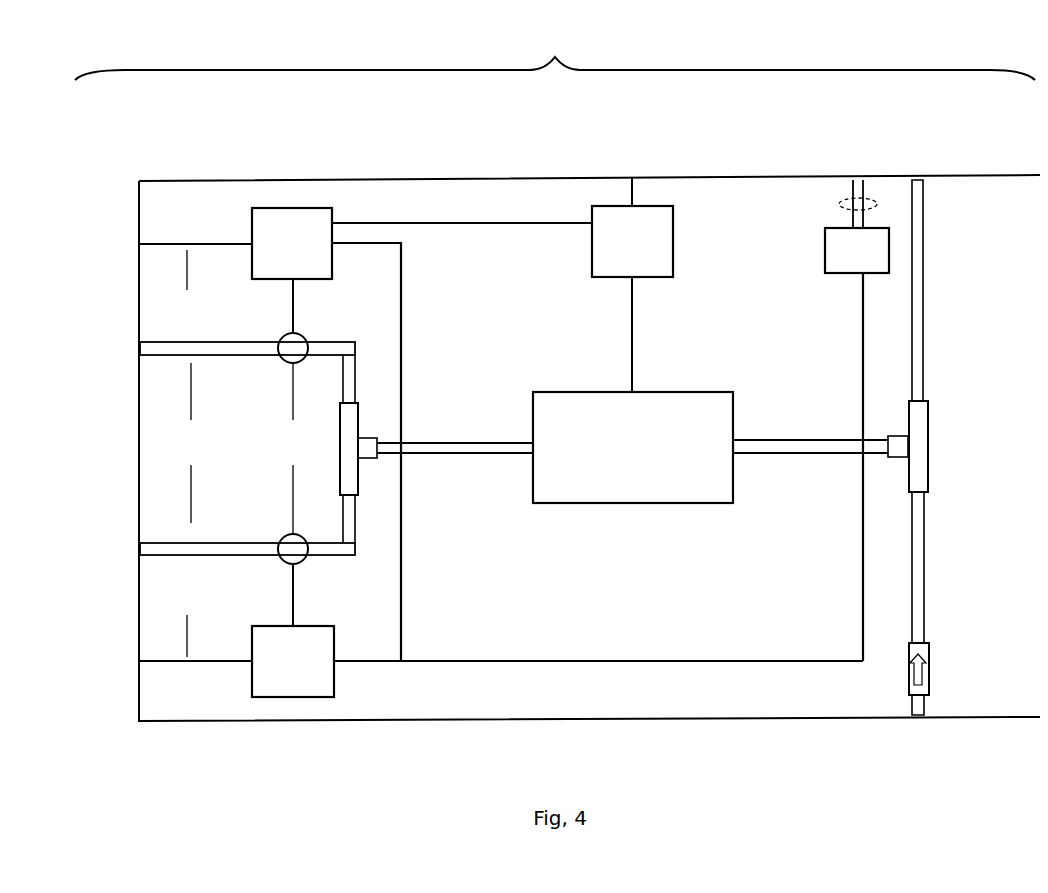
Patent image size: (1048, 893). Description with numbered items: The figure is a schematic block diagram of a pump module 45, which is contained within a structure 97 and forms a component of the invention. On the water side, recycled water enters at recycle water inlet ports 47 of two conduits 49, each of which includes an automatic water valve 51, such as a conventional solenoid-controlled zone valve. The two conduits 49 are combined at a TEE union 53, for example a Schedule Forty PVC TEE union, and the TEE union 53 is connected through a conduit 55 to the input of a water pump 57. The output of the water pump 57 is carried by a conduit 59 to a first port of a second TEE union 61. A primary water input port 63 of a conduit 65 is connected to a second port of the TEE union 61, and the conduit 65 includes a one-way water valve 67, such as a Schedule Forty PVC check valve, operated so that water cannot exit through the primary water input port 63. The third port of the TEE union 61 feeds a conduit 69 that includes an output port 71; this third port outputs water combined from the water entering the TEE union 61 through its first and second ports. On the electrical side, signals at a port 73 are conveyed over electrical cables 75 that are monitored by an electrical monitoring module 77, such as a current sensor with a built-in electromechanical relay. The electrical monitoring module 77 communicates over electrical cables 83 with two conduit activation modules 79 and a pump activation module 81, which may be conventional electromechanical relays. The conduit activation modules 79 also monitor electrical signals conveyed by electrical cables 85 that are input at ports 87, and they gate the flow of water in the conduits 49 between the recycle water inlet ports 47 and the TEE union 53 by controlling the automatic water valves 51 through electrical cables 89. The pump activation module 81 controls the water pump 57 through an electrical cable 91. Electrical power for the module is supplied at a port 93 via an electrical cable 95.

The pump module 45 is at (555, 42).
The recycle water inlet ports 47 is at (128, 353).
The conduits 49 is at (337, 333).
The automatic water valves 51 is at (292, 448).
The TEE union 53 is at (370, 418).
The conduit 55 is at (437, 462).
The water pump 57 is at (597, 472).
The conduit 59 is at (765, 462).
The TEE union 61 is at (933, 445).
The primary water input port 63 is at (915, 723).
The conduit 65 is at (937, 570).
The one-way water valve 67 is at (933, 670).
The conduit 69 is at (930, 287).
The output port 71 is at (923, 168).
The port 73 is at (855, 170).
The electrical cables 75 is at (832, 205).
The electrical monitoring module 77 is at (819, 250).
The conduit activation modules 79 is at (286, 232).
The pump activation module 81 is at (616, 250).
The electrical cables 83 is at (435, 230).
The electrical cables 85 is at (186, 453).
The ports 87 is at (127, 253).
The electrical cables 89 is at (287, 312).
The electrical cable 91 is at (620, 341).
The port 93 is at (624, 167).
The electrical cable 95 is at (638, 192).
The structure 97 is at (510, 725).